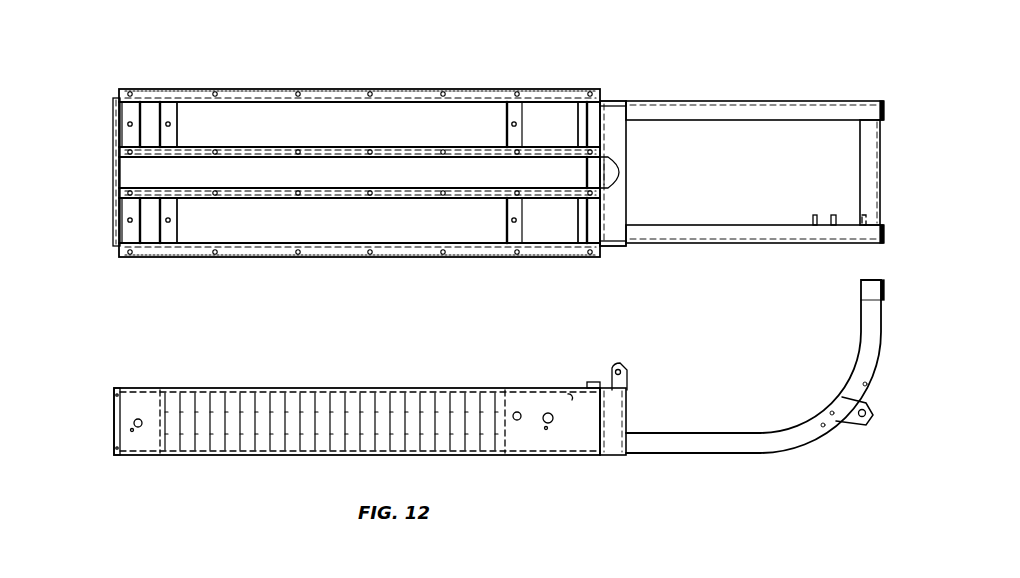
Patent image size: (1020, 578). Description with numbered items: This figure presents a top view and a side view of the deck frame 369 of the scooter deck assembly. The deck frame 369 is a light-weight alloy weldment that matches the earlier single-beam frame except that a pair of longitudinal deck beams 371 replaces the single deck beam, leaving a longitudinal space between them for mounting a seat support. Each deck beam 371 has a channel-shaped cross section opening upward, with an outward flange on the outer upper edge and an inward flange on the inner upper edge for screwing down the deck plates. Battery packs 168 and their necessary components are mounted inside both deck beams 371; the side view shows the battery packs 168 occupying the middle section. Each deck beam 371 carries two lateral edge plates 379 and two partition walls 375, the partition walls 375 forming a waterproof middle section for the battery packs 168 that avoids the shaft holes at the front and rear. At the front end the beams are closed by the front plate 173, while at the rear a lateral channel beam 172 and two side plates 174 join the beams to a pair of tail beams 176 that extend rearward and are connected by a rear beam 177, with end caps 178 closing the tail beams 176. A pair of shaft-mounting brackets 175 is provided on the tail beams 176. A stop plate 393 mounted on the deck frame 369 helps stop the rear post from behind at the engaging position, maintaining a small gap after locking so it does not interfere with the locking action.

The deck frame 369 is at (165, 70).
The deck beams 371 is at (365, 90).
The front plate 173 is at (113, 172).
The partition walls 375 is at (178, 112).
The lateral edge plates 379 is at (578, 124).
The lateral channel beam 172 is at (628, 212).
The stop plate 393 is at (637, 103).
The side plates 174 is at (614, 101).
The tail beams 176 is at (752, 103).
The rear beam 177 is at (883, 172).
The end caps 178 is at (885, 110).
The battery packs 168 is at (350, 403).
The shaft-mounting brackets 175 is at (873, 419).